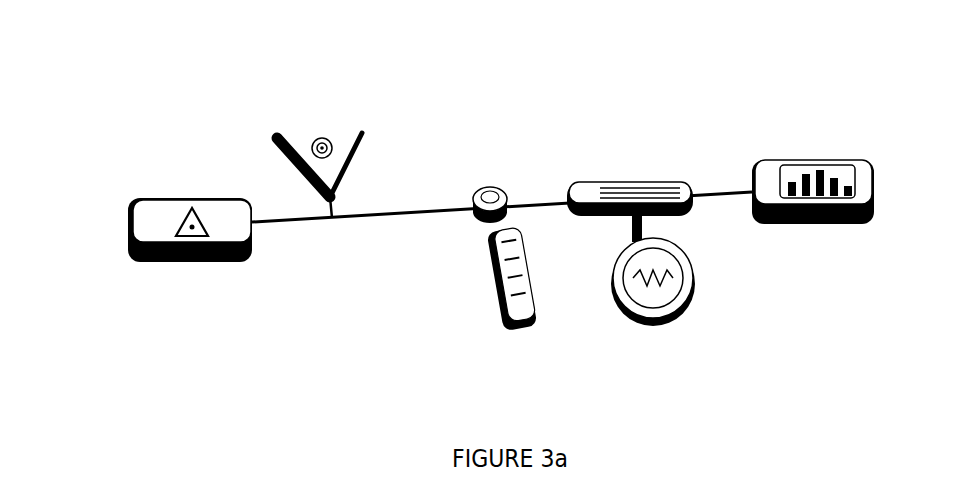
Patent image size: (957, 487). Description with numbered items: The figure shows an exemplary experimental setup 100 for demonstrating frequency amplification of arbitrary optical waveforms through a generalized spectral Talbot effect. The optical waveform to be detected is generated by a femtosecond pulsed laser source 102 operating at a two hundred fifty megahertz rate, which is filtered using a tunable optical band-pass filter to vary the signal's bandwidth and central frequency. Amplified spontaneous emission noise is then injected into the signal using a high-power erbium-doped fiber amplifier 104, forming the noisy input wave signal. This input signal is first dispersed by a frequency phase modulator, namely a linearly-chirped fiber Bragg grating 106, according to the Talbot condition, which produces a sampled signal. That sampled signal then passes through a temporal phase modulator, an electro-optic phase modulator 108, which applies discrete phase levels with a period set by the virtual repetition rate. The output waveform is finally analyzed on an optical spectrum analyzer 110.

The setup 100 is at (461, 186).
The pulsed laser source 102 is at (157, 230).
The erbium-doped fiber amplifier 104 is at (345, 140).
The linearly-chirped fiber Bragg grating 106 is at (507, 277).
The electro-optic phase modulator 108 is at (593, 190).
The optical spectrum analyzer 110 is at (800, 173).